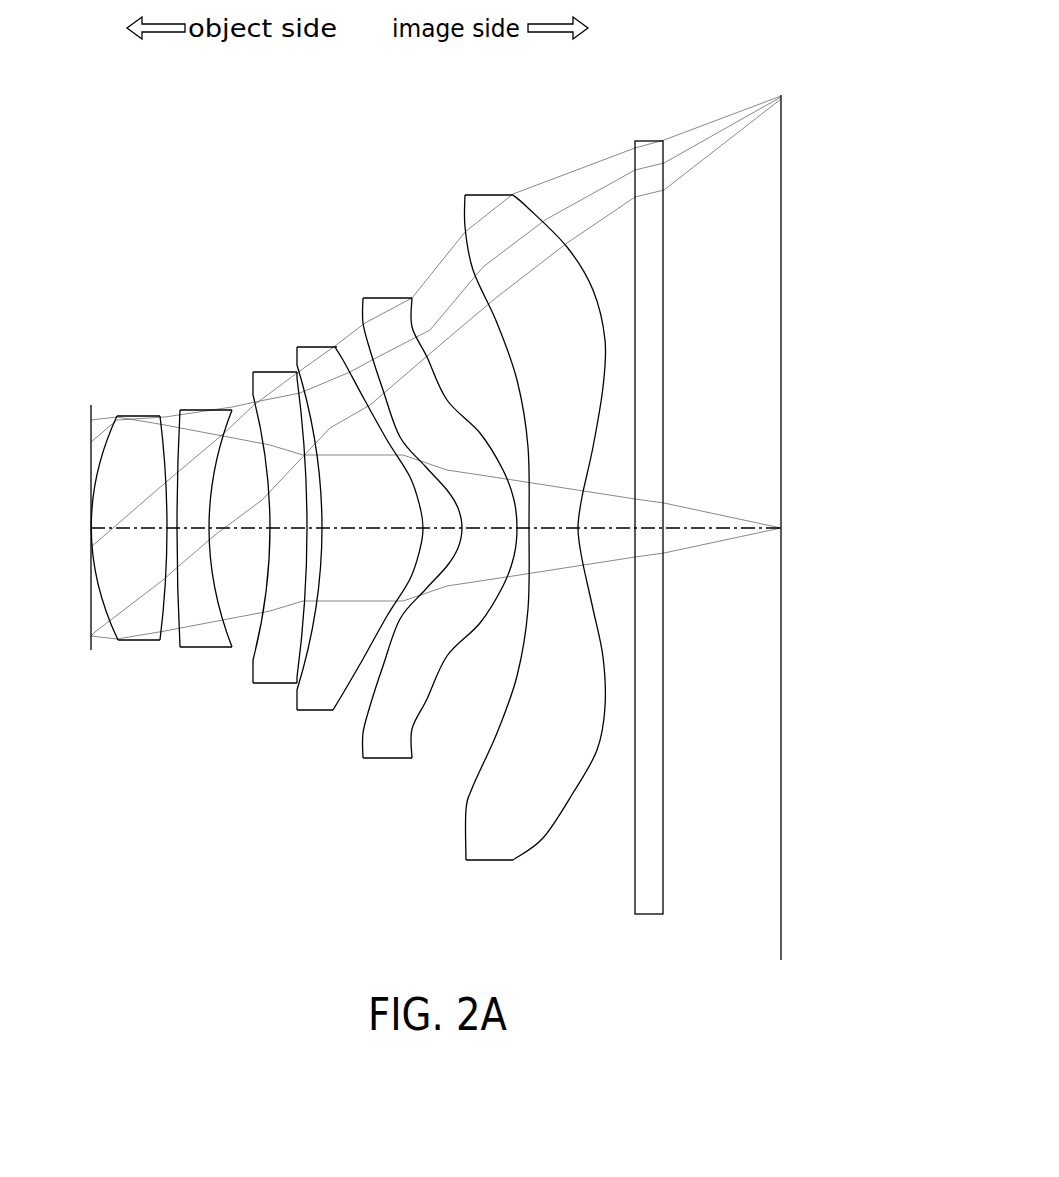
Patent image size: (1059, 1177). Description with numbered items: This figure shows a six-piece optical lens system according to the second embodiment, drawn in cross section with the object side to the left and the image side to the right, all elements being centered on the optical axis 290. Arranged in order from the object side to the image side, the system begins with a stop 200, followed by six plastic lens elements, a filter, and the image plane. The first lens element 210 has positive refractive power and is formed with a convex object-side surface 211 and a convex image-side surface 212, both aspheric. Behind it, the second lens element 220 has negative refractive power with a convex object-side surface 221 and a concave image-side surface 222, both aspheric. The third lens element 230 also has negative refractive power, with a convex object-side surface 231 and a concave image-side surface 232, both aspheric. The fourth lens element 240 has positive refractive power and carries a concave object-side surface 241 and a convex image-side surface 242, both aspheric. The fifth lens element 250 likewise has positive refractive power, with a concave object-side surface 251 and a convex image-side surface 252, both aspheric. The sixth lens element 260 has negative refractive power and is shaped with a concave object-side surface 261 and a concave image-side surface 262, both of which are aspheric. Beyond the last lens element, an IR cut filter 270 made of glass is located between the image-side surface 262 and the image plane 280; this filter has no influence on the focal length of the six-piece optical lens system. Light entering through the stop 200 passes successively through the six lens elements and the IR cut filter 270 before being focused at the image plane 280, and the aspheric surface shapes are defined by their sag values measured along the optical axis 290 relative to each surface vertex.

The stop 200 is at (108, 415).
The first lens element 210 is at (122, 521).
The object-side surface of first lens element 211 is at (106, 622).
The image-side surface of first lens element 212 is at (163, 587).
The second lens element 220 is at (192, 528).
The object-side surface of second lens element 221 is at (178, 637).
The image-side surface of second lens element 222 is at (217, 610).
The third lens element 230 is at (258, 523).
The object-side surface of third lens element 231 is at (262, 632).
The image-side surface of third lens element 232 is at (300, 648).
The fourth lens element 240 is at (344, 524).
The object-side surface of fourth lens element 241 is at (306, 652).
The image-side surface of fourth lens element 242 is at (343, 695).
The fifth lens element 250 is at (432, 513).
The object-side surface of fifth lens element 251 is at (364, 722).
The image-side surface of fifth lens element 252 is at (413, 730).
The sixth lens element 260 is at (501, 518).
The object-side surface of sixth lens element 261 is at (466, 810).
The image-side surface of sixth lens element 262 is at (543, 838).
The IR cut filter 270 is at (650, 138).
The image plane 280 is at (778, 176).
The optical axis 290 is at (687, 528).